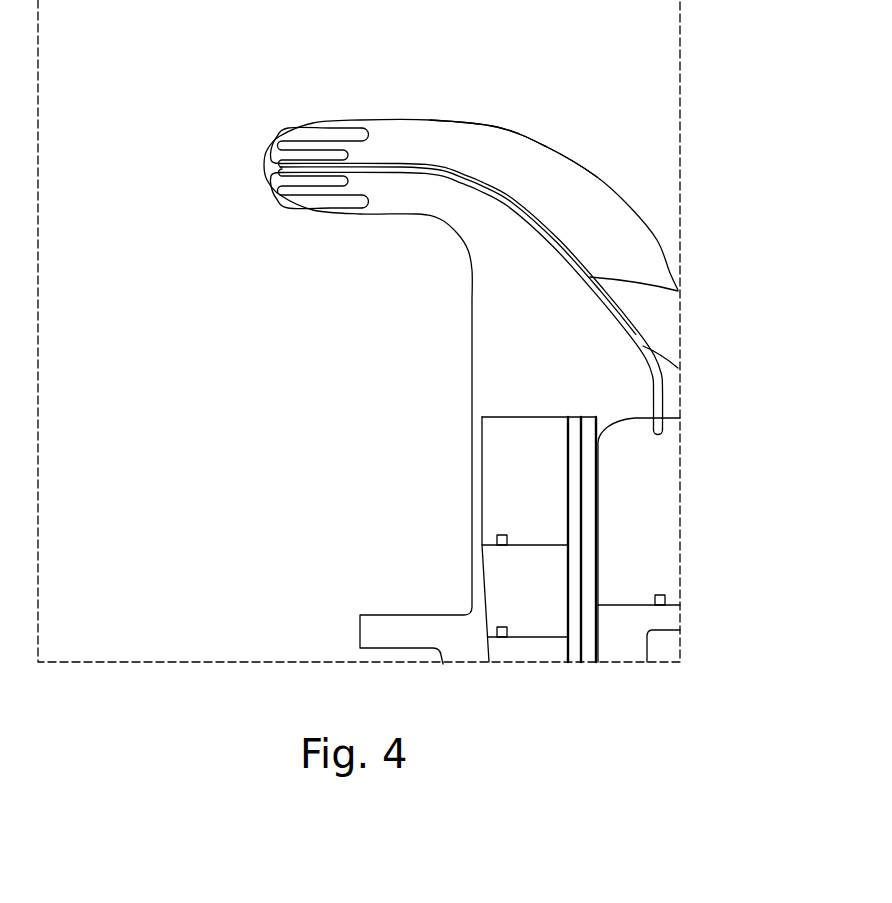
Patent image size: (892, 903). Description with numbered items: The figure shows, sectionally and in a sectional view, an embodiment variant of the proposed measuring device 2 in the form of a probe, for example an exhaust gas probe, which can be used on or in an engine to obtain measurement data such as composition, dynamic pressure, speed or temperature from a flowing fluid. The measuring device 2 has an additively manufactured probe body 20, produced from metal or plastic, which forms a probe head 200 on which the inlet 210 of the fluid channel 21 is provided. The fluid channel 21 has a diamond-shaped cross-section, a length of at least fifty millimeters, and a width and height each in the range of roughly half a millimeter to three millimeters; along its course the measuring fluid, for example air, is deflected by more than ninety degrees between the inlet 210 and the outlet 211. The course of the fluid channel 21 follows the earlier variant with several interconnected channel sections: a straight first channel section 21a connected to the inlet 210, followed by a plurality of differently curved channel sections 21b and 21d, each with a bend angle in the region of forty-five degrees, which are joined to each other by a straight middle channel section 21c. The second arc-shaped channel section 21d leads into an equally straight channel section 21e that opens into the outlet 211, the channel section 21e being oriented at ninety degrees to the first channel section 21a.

The measuring device 2 is at (282, 80).
The probe body 20 is at (471, 342).
The probe head 200 is at (447, 120).
The fluid channel 21 is at (478, 268).
The first channel section 21a is at (428, 160).
The arc-shaped channel section 21b is at (511, 193).
The straight middle channel section 21c is at (557, 253).
The arc-shaped channel section 21d is at (648, 345).
The channel section opening into the outlet 21e is at (665, 397).
The inlet 210 is at (258, 168).
The outlet 211 is at (667, 428).